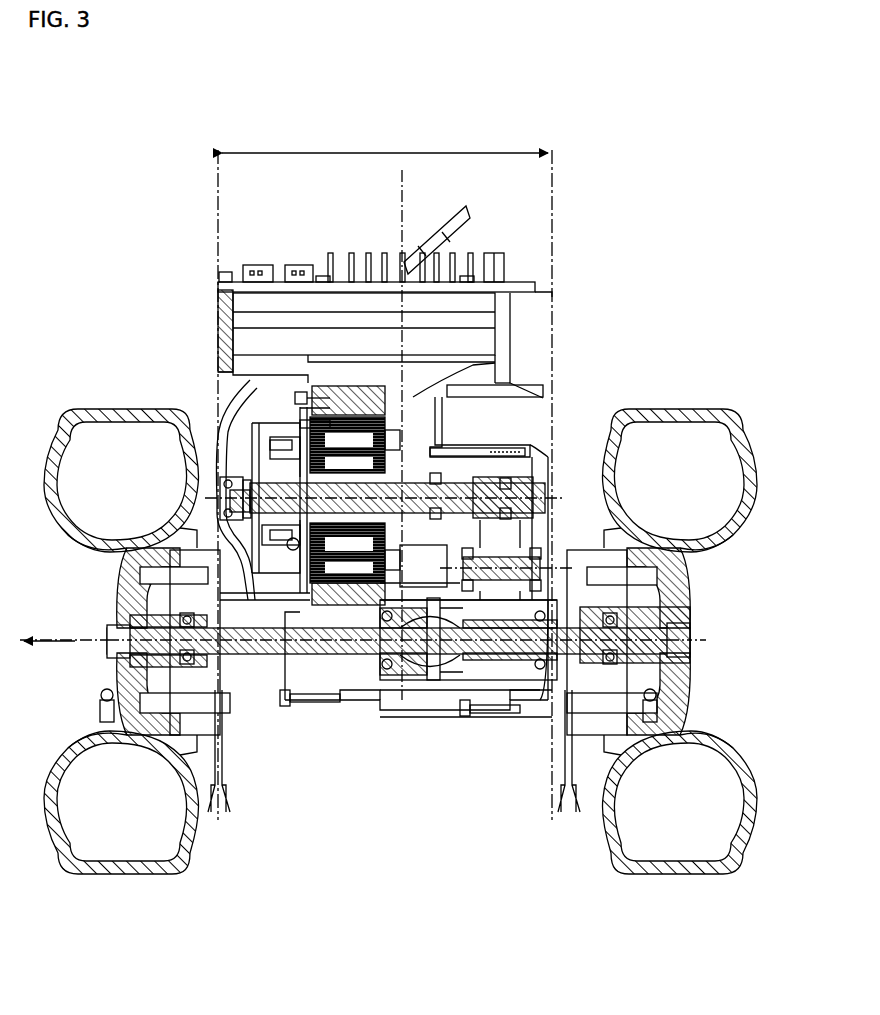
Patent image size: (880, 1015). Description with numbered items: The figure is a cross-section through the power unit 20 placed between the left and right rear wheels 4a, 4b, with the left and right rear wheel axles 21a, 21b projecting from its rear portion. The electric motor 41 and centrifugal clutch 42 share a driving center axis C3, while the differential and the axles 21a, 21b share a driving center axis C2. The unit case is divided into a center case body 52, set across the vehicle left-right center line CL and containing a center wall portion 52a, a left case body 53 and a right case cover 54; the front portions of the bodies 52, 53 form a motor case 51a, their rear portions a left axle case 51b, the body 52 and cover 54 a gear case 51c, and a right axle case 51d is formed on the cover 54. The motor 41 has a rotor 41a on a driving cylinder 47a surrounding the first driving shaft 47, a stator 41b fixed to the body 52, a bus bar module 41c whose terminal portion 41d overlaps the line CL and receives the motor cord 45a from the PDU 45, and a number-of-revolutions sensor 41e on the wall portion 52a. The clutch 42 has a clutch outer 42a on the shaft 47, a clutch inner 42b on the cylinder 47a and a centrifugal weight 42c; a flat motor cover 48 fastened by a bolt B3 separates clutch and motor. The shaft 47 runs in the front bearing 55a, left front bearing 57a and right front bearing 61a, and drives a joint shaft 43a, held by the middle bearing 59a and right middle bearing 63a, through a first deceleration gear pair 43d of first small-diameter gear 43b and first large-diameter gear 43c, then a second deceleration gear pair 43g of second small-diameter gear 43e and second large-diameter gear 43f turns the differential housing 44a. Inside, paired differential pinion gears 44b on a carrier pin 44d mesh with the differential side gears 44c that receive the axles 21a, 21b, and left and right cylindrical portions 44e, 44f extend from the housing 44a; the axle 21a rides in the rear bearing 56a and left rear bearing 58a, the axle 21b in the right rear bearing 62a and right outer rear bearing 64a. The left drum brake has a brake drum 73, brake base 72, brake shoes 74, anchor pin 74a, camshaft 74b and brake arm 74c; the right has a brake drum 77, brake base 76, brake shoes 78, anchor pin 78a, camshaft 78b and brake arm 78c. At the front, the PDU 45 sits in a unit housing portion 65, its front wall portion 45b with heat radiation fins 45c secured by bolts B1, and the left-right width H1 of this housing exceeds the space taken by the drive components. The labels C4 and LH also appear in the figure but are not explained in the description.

The power unit 20 is at (592, 243).
The left rear wheel 4a is at (82, 407).
The right rear wheel 4b is at (735, 407).
The left rear wheel axle 21a is at (300, 712).
The right rear wheel axle 21b is at (465, 712).
The electric motor 41 is at (322, 893).
The rotor 41a is at (235, 760).
The stator 41b is at (300, 702).
The bus bar module 41c is at (388, 413).
The terminal portion 41d is at (437, 440).
The number-of-revolutions sensor 41e is at (390, 566).
The centrifugal clutch 42 is at (140, 312).
The clutch outer 42a is at (265, 445).
The clutch inner 42b is at (262, 470).
The centrifugal weight 42c is at (292, 425).
The joint shaft 43a is at (600, 560).
The first small-diameter gear 43b is at (556, 402).
The first large-diameter gear 43c is at (556, 400).
The first deceleration gear pair 43d is at (680, 315).
The second small-diameter gear 43e is at (500, 702).
The second large-diameter gear 43f is at (525, 702).
The second deceleration gear pair 43g is at (552, 883).
The housing 44a is at (395, 682).
The differential pinion gears 44b is at (440, 695).
The differential side gears 44c is at (432, 690).
The carrier pin 44d is at (432, 692).
The left cylindrical portion 44e is at (370, 712).
The right cylindrical portion 44f is at (472, 712).
The PDU 45 is at (297, 302).
The motor cord 45a is at (415, 390).
The front wall portion 45b is at (322, 282).
The heat radiation fins 45c is at (385, 252).
The first driving shaft 47 is at (552, 500).
The driving cylinder 47a is at (262, 535).
The motor cover 48 is at (286, 577).
The motor case 51a is at (217, 456).
The left axle case 51b is at (225, 760).
The gear case 51c is at (538, 448).
The right axle case 51d is at (566, 592).
The center case body 52 is at (360, 690).
The center wall portion 52a is at (495, 450).
The left case body 53 is at (290, 690).
The right case cover 54 is at (526, 712).
The front bearing 55a is at (558, 398).
The rear bearing 56a is at (345, 702).
The left front bearing 57a is at (228, 490).
The left rear bearing 58a is at (173, 613).
The middle bearing 59a is at (457, 720).
The right front bearing 61a is at (570, 412).
The right rear bearing 62a is at (668, 632).
The right middle bearing 63a is at (612, 560).
The right outer rear bearing 64a is at (668, 660).
The unit housing portion 65 is at (222, 330).
The brake base 72 is at (153, 578).
The brake drum 73 is at (205, 530).
The brake shoes 74 is at (153, 677).
The anchor pin 74a is at (92, 547).
The camshaft 74b is at (153, 703).
The brake arm 74c is at (224, 818).
The brake base 76 is at (653, 588).
The brake drum 77 is at (640, 573).
The brake shoes 78 is at (647, 682).
The anchor pin 78a is at (640, 562).
The camshaft 78b is at (647, 703).
The brake arm 78c is at (572, 818).
The bolts B1 is at (222, 272).
The bolt B3 is at (300, 397).
The driving center axis C2 is at (75, 643).
The driving center axis C3 is at (535, 480).
The intermediate shaft axis C4 is at (520, 542).
The vehicle body left-right center line CL is at (410, 205).
The left-right width H1 is at (385, 141).
The left-hand direction LH is at (48, 627).